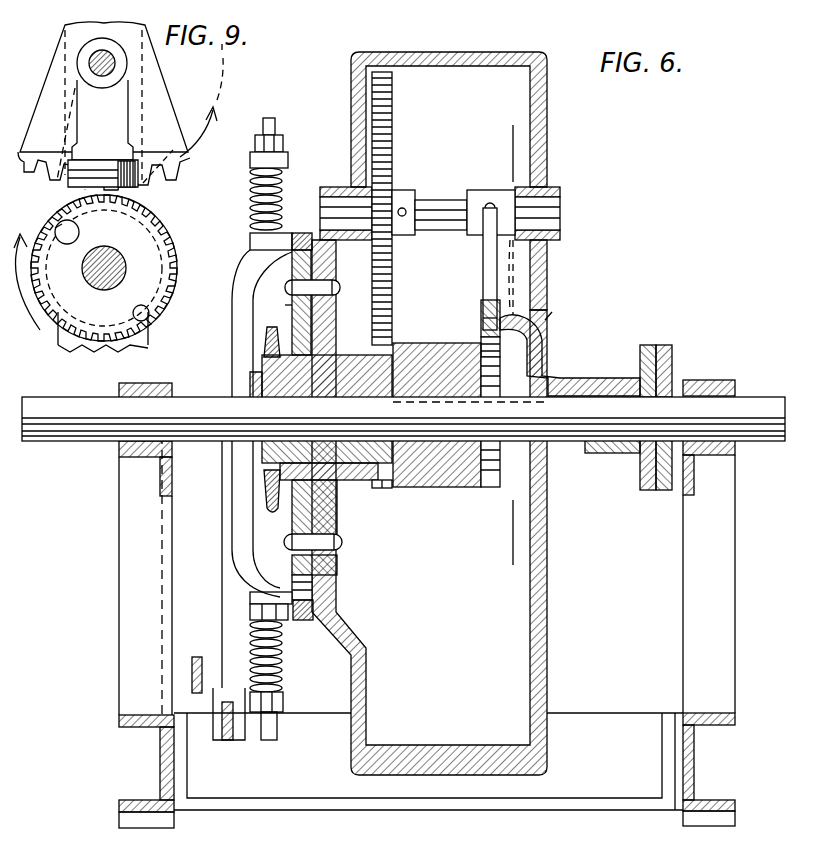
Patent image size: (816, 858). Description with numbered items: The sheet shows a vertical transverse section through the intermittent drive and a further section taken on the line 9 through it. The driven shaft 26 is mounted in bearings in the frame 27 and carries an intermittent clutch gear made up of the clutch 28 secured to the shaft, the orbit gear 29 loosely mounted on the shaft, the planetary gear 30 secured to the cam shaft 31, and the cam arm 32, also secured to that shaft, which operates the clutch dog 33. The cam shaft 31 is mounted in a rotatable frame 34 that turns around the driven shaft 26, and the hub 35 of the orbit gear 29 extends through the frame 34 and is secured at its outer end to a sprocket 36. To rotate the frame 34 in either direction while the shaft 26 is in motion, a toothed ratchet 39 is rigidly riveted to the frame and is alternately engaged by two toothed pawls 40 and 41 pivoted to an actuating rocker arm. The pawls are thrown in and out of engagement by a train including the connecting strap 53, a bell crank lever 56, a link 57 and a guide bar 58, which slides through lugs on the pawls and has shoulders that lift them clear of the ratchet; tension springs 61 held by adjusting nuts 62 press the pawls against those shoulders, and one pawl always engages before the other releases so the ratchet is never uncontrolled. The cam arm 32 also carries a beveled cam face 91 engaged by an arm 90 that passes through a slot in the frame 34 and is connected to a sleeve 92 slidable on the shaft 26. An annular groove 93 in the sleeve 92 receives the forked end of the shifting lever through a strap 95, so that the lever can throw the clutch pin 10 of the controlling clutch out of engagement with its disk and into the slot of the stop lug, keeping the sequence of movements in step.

In FIG. 6, the section line 9— 9 is at (507, 345).
In FIG. 9, the clutch pin 10 is at (55, 228).
In FIG. 9, the driven shaft 26 is at (105, 285).
In FIG. 6, the driven shaft 26 is at (57, 443).
In FIG. 6, the frame 27 is at (135, 553).
In FIG. 9, the clutch 28 is at (150, 258).
In FIG. 6, the clutch 28 is at (430, 488).
In FIG. 6, the orbit gear 29 is at (380, 490).
In FIG. 9, the planetary gear 30 is at (150, 90).
In FIG. 6, the planetary gear 30 is at (393, 162).
In FIG. 9, the cam shaft 31 is at (90, 63).
In FIG. 6, the cam shaft 31 is at (445, 228).
In FIG. 9, the cam arm 32 is at (103, 133).
In FIG. 6, the cam arm 32 is at (483, 272).
In FIG. 9, the clutch dog 33 is at (86, 232).
In FIG. 6, the clutch dog 33 is at (480, 342).
In FIG. 9, the rotatable frame 34 is at (60, 340).
In FIG. 6, the rotatable frame 34 is at (547, 118).
In FIG. 6, the hub 35 is at (346, 375).
In FIG. 6, the sprocket 36 is at (272, 513).
In FIG. 6, the ratchet 39 is at (285, 307).
In FIG. 6, the toothed pawl 40 is at (301, 230).
In FIG. 6, the toothed pawl 41 is at (304, 622).
In FIG. 6, the connecting strap 53 is at (190, 663).
In FIG. 6, the bell crank lever 56 is at (228, 745).
In FIG. 6, the link 57 is at (236, 582).
In FIG. 6, the guide bar 58 is at (245, 340).
In FIG. 6, the tension spring 61 is at (248, 196).
In FIG. 6, the adjusting nut 62 is at (258, 152).
In FIG. 6, the arm 90 is at (556, 352).
In FIG. 9, the beveled cam face 91 is at (146, 154).
In FIG. 6, the beveled cam face 91 is at (483, 318).
In FIG. 6, the sleeve 92 is at (615, 455).
In FIG. 6, the annular groove 93 is at (672, 372).
In FIG. 6, the strap 95 is at (652, 470).